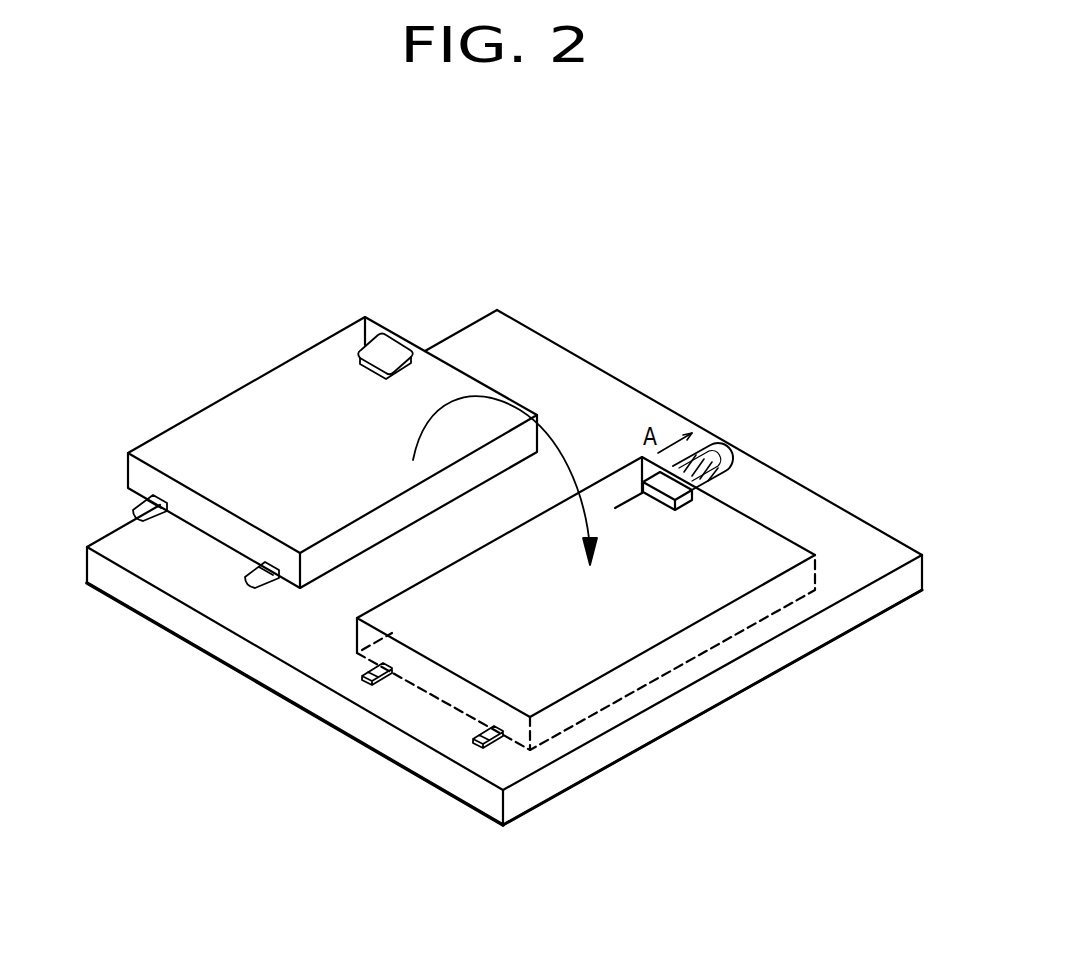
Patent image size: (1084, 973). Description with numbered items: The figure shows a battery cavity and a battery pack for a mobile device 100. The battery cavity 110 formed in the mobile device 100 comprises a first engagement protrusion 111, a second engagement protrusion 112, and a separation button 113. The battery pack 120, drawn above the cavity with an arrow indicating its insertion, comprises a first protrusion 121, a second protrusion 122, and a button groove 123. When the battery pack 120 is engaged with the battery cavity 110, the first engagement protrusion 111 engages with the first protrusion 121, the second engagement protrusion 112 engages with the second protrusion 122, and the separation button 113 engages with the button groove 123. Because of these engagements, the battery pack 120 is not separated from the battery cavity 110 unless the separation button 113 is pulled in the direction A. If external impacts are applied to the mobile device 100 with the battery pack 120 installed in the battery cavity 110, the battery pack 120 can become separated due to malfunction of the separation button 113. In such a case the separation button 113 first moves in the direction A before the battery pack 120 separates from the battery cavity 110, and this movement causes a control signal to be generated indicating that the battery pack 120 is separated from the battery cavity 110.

The mobile device 100 is at (637, 382).
The battery cavity 110 is at (658, 625).
The first engagement protrusion 111 is at (365, 683).
The second engagement protrusion 112 is at (478, 747).
The separation button 113 is at (730, 477).
The battery pack 120 is at (470, 370).
The first protrusion 121 is at (137, 518).
The second protrusion 122 is at (252, 582).
The button groove 123 is at (383, 363).